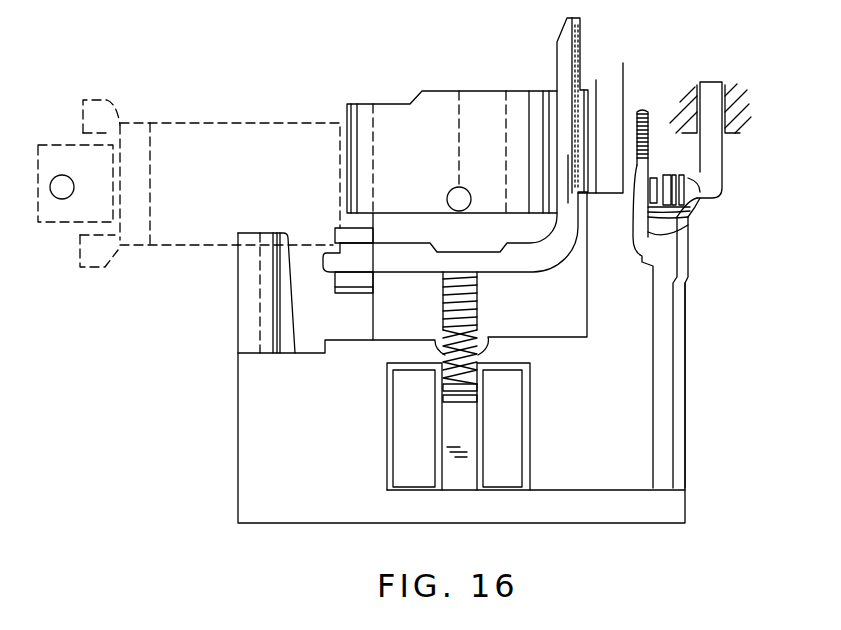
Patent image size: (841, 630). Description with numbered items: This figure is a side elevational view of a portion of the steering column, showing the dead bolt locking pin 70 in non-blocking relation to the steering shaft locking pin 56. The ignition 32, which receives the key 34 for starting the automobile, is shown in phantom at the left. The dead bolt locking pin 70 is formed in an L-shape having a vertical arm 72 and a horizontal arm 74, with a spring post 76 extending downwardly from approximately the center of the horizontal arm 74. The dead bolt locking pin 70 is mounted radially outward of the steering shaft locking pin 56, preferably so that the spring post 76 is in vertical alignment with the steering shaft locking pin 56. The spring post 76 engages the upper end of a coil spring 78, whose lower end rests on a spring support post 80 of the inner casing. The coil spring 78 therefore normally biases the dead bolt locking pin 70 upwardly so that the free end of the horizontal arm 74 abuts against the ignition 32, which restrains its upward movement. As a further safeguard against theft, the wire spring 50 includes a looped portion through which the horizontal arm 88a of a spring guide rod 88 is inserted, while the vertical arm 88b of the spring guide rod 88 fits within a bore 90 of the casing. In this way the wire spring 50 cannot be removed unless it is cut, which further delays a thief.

The ignition 32 is at (212, 113).
The key 34 is at (66, 150).
The wire spring 50 is at (664, 233).
The steering shaft locking pin 56 is at (447, 195).
The dead bolt locking pin 70 is at (335, 240).
The vertical arm 72 is at (571, 53).
The horizontal arm 74 is at (342, 257).
The spring post 76 is at (478, 299).
The coil spring 78 is at (478, 357).
The spring support post 80 is at (452, 398).
The spring guide rod 88 is at (724, 285).
The horizontal arm 88a is at (702, 199).
The vertical arm 88b is at (713, 142).
The bore 90 is at (697, 105).